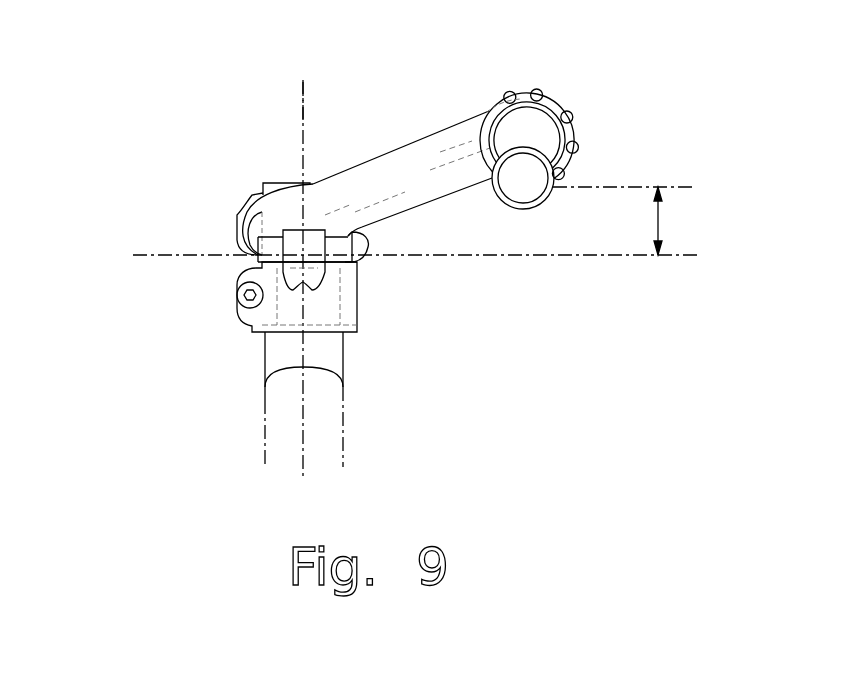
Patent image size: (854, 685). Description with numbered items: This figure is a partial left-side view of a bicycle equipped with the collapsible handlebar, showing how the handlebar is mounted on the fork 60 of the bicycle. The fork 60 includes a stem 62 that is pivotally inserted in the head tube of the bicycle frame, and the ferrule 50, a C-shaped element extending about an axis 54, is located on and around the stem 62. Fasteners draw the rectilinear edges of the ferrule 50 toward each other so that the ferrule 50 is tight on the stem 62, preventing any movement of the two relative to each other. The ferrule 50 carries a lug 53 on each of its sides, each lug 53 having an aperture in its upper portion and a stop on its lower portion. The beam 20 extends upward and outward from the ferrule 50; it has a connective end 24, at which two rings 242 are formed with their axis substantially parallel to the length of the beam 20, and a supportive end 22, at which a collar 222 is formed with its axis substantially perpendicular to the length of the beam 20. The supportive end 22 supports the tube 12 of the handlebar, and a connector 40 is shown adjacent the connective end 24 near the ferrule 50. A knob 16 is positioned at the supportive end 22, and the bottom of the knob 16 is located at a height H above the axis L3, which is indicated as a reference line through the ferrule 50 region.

The tube 12 is at (532, 137).
The knob 16 is at (556, 101).
The beam 20 is at (400, 176).
The supportive end 22 is at (495, 110).
The collar 222 is at (523, 112).
The connective end 24 is at (260, 242).
The rings 242 is at (365, 262).
The connector 40 is at (383, 245).
The ferrule 50 is at (222, 315).
The lug 53 is at (322, 268).
The axis 54 is at (302, 108).
The fork 60 is at (250, 400).
The stem 62 is at (263, 185).
The axis L3 is at (152, 255).
The height H is at (660, 221).